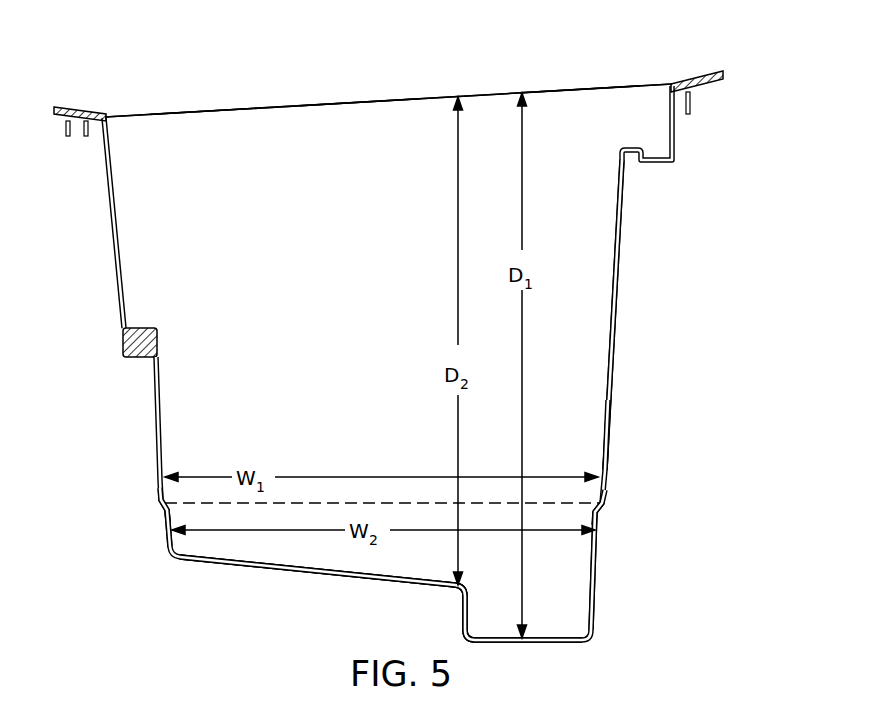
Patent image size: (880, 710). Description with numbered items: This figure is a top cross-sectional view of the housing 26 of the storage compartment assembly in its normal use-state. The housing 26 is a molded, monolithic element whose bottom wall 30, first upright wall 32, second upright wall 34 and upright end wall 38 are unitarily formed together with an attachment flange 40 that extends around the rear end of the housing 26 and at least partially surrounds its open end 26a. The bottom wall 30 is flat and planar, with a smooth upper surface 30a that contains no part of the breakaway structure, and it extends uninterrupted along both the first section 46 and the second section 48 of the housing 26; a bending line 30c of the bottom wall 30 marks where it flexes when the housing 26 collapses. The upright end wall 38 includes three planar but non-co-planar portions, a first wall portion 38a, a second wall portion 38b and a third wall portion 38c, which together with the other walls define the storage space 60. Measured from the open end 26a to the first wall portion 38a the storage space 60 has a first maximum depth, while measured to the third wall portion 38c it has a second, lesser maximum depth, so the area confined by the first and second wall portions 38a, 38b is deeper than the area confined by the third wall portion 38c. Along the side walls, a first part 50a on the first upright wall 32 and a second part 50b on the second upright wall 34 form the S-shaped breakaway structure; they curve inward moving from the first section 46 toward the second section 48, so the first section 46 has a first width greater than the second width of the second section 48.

The housing 26 is at (126, 76).
The open end 26a is at (278, 105).
The bottom wall 30 is at (568, 140).
The upper surface 30a is at (203, 158).
The bending line 30c is at (328, 501).
The first upright wall 32 is at (167, 536).
The second upright wall 34 is at (620, 293).
The upright end wall 38 is at (333, 588).
The first wall portion 38a is at (548, 645).
The second wall portion 38b is at (465, 618).
The third wall portion 38c is at (262, 573).
The attachment flange 40 is at (700, 92).
The first section 46 is at (560, 405).
The second section 48 is at (565, 603).
The first part 50a is at (163, 506).
The second part 50b is at (603, 506).
The storage space 60 is at (348, 172).